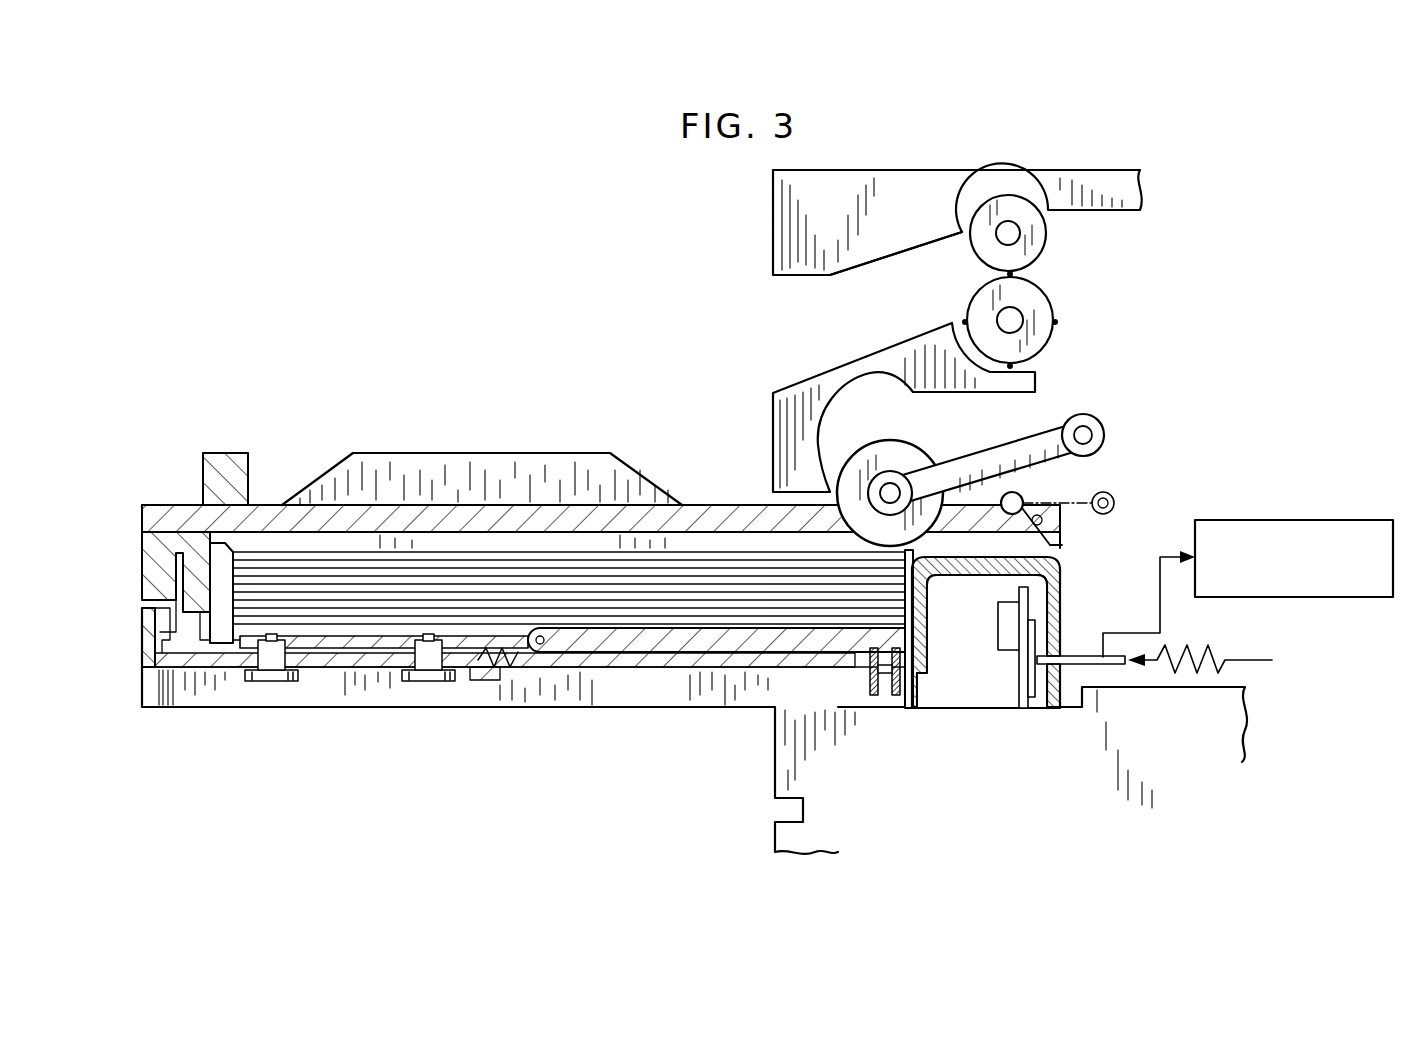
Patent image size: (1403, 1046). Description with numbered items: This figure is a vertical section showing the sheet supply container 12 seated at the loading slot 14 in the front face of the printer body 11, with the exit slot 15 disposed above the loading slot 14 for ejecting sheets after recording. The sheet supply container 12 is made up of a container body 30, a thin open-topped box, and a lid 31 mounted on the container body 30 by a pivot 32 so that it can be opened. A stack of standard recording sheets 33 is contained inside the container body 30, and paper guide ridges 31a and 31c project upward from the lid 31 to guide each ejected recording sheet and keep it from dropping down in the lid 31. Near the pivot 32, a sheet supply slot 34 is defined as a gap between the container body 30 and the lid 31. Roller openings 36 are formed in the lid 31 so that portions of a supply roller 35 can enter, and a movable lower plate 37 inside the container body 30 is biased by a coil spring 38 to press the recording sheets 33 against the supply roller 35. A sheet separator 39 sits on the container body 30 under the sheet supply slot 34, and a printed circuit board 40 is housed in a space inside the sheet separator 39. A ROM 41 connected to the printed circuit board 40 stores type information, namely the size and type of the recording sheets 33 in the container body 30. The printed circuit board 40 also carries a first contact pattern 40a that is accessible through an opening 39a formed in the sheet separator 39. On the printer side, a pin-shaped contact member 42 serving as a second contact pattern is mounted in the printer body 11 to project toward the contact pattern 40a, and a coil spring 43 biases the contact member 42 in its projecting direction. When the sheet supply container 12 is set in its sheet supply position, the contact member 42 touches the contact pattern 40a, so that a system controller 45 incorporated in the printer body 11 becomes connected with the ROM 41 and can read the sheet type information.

The printer body 11 is at (760, 191).
The sheet supply container 12 is at (345, 718).
The loading slot 14 is at (773, 490).
The exit slot 15 is at (882, 262).
The container body 30 is at (142, 660).
The lid 31 is at (703, 503).
The paper guide ridge 31a is at (440, 455).
The paper guide ridge 31c is at (226, 452).
The pivot 32 is at (1060, 548).
The recording sheets 33 is at (540, 542).
The sheet supply slot 34 is at (1062, 558).
The supply roller 35 is at (888, 443).
The roller openings 36 is at (845, 482).
The movable lower plate 37 is at (607, 655).
The coil spring 38 is at (895, 700).
The sheet separator 39 is at (967, 585).
The opening 39a is at (1068, 668).
The printed circuit board 40 is at (1023, 710).
The first contact pattern 40a is at (1036, 708).
The ROM 41 is at (1008, 652).
The contact member 42 is at (1080, 655).
The coil spring 43 is at (1210, 653).
The system controller 45 is at (1300, 520).